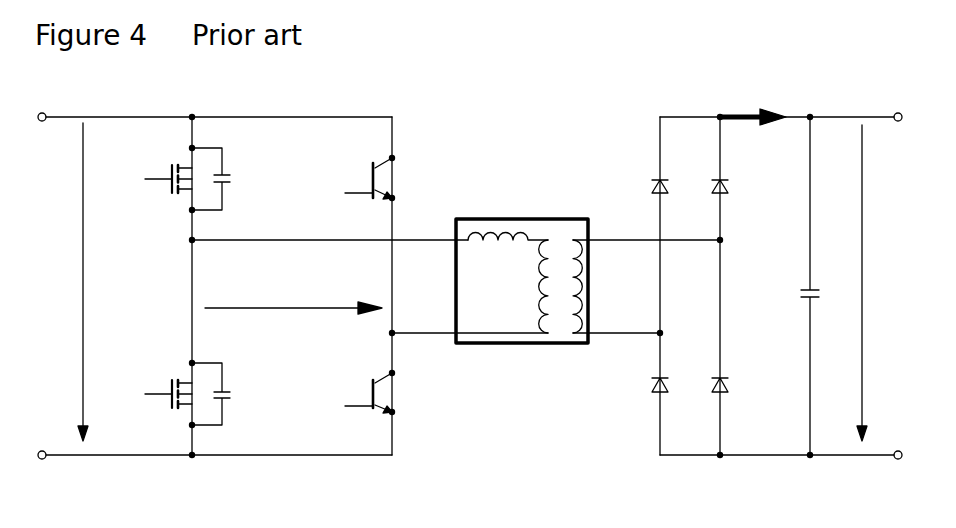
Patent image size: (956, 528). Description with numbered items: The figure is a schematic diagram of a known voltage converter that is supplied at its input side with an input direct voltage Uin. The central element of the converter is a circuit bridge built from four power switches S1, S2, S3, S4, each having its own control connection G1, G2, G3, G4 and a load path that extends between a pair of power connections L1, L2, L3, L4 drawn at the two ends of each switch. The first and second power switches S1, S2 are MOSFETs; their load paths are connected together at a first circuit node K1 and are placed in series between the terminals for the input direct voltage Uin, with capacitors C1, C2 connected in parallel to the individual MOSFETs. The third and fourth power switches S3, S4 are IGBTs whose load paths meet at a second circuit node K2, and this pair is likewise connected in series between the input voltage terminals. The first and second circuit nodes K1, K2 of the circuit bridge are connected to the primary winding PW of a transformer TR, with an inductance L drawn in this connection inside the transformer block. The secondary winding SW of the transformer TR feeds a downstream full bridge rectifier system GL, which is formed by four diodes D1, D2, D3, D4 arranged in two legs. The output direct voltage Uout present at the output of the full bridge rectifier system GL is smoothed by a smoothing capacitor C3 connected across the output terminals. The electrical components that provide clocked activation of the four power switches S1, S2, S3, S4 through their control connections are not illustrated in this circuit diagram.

The input direct voltage Uin is at (60, 282).
The output direct voltage Uout is at (885, 283).
The first power switch S1 is at (169, 164).
The second power switch S2 is at (175, 380).
The third power switch S3 is at (366, 171).
The fourth power switch S4 is at (366, 388).
The control connection G1 is at (146, 184).
The control connection G2 is at (146, 401).
The control connection G3 is at (345, 197).
The control connection G4 is at (345, 412).
The capacitor C1 is at (225, 179).
The capacitor C2 is at (225, 394).
The smoothing capacitor C3 is at (827, 286).
The power connection L1 is at (193, 147).
The power connection L2 is at (192, 363).
The power connection L3 is at (392, 158).
The power connection L4 is at (392, 376).
The first circuit node K1 is at (317, 247).
The second circuit node K2 is at (458, 337).
The inductor L is at (500, 235).
The transformer TR is at (550, 219).
The primary winding PW is at (548, 287).
The secondary winding SW is at (568, 312).
The diode D1 is at (647, 176).
The diode D2 is at (647, 376).
The diode D3 is at (706, 176).
The diode D4 is at (706, 376).
The full bridge rectifier system GL is at (695, 92).